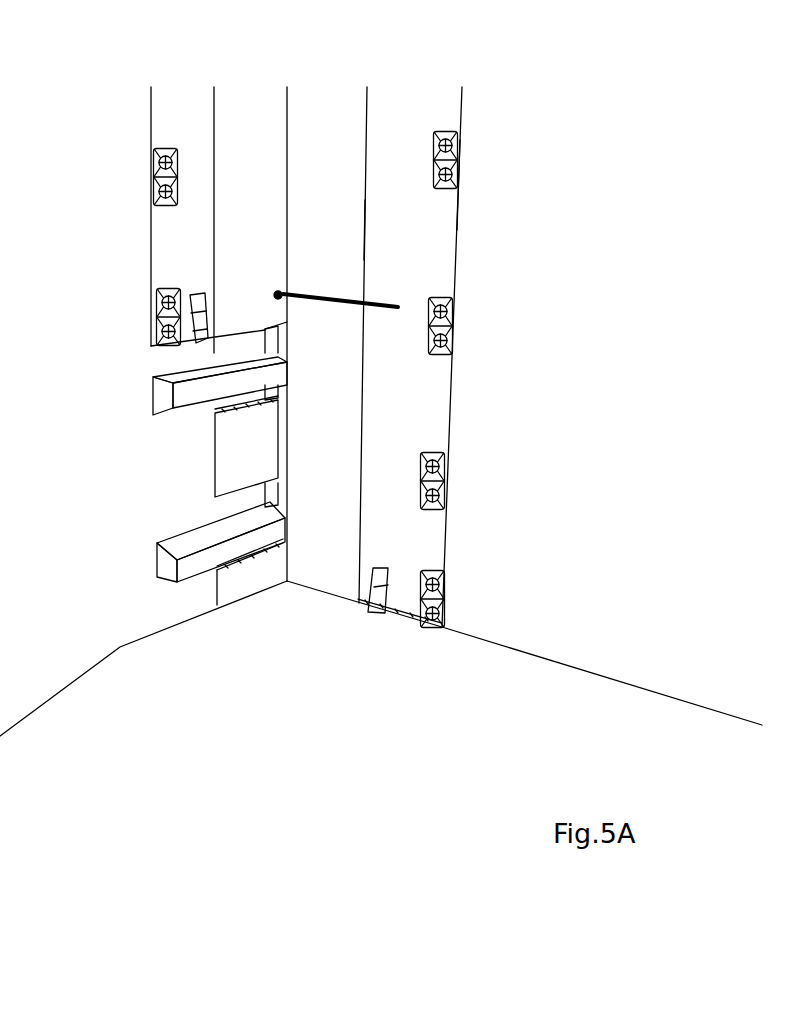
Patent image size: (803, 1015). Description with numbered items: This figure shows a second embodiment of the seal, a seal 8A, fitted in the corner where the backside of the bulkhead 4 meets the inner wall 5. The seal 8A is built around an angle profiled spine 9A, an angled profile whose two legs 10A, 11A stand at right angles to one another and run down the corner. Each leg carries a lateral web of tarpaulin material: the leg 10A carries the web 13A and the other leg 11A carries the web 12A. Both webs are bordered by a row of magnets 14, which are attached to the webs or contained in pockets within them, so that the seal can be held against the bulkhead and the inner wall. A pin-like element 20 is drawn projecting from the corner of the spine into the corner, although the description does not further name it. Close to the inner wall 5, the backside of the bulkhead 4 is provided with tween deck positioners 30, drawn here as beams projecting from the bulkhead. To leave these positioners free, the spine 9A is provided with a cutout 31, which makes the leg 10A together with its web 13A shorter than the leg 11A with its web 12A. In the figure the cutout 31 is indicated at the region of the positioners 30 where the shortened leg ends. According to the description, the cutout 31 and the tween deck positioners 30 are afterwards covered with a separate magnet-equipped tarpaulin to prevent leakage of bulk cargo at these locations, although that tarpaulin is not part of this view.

The seal 8A is at (306, 96).
The angle profiled spine 9A is at (352, 113).
The leg 10A is at (230, 249).
The leg 11A is at (345, 268).
The web 12A is at (440, 242).
The web 13A is at (170, 225).
The magnets 14 is at (457, 148).
The connecting pin 20 is at (300, 292).
The tween deck positioners 30 is at (195, 540).
The cutout 31 is at (165, 358).
The bulkhead 4 is at (132, 628).
The inner wall 5 is at (518, 628).